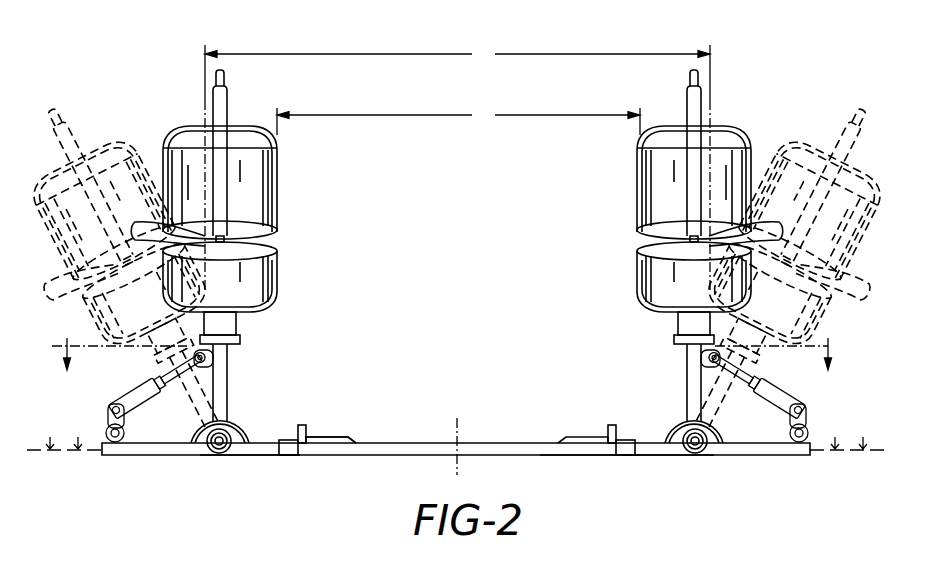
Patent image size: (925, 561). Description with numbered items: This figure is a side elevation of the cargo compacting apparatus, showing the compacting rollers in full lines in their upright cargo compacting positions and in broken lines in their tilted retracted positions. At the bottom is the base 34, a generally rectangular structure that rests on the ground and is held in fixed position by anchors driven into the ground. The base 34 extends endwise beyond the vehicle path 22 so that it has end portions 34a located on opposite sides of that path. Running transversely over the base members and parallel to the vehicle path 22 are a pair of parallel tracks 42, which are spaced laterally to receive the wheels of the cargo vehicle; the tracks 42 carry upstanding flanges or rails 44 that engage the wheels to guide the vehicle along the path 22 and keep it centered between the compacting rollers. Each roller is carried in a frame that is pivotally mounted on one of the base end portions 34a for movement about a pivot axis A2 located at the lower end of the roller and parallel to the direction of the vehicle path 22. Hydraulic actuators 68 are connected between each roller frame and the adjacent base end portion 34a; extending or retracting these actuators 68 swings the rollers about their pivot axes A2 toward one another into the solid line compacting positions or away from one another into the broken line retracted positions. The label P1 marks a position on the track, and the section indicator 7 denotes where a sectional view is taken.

The vehicle path 22 is at (590, 457).
The base 34 is at (323, 459).
The end portions 34a is at (258, 457).
The tracks 42 is at (331, 436).
The rails 44 is at (302, 424).
The hydraulic actuators 68 is at (151, 398).
The section line 7 is at (445, 373).
The pivot axes A2 is at (218, 446).
The position P1 is at (346, 437).